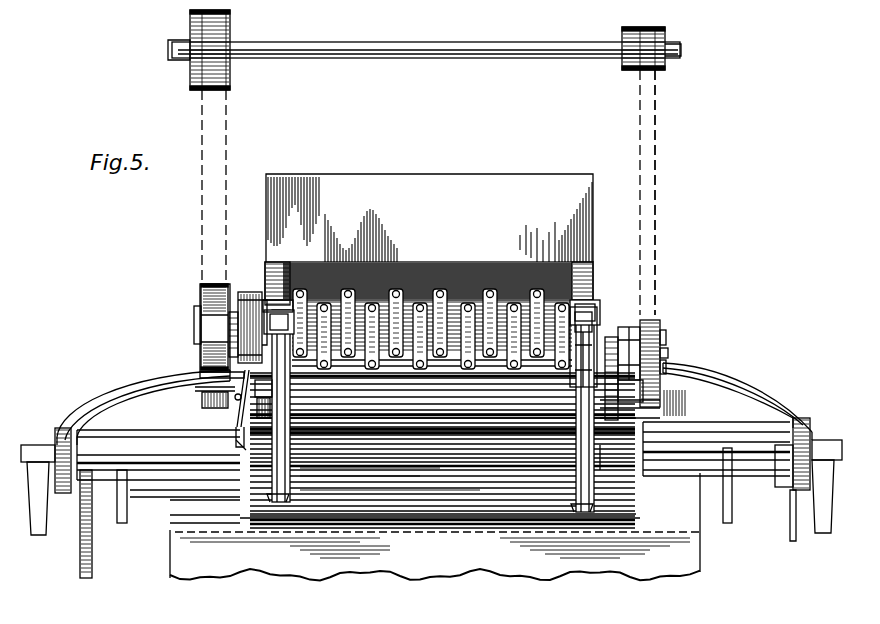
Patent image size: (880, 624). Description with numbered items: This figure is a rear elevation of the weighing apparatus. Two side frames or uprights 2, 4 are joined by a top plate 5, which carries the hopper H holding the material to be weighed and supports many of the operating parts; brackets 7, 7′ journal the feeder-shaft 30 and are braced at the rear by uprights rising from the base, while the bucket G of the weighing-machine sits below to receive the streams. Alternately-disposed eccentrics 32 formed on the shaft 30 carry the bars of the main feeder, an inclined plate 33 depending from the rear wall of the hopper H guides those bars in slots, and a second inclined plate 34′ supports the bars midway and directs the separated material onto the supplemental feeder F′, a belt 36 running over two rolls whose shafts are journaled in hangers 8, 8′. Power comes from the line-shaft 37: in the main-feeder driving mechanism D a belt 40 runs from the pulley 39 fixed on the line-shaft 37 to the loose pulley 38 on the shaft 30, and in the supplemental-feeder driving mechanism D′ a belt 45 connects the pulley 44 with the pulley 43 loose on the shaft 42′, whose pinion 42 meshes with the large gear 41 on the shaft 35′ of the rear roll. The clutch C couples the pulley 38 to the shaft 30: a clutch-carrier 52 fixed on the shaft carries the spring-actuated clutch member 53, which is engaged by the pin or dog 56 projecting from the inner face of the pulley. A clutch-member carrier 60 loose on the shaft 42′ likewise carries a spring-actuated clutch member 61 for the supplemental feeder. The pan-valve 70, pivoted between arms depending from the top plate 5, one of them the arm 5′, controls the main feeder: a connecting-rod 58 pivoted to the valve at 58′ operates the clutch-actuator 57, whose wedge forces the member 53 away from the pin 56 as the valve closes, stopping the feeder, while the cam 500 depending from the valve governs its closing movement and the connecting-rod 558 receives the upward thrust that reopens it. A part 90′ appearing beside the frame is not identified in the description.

The line-shaft 37 is at (608, 50).
The pulley or belt-wheel 39 is at (218, 40).
The pulley or band-wheel 44 is at (650, 62).
The belt 45 is at (655, 167).
The driving mechanism for the main feeder D is at (199, 187).
The driving mechanism for the supplemental feeder D′ is at (658, 192).
The supply device or hopper H is at (275, 222).
The inclined plate 33 is at (590, 268).
The bracket 7 is at (265, 279).
The bracket 7′ is at (591, 285).
The eccentrics 32 is at (425, 344).
The second inclined plate 34′ is at (400, 373).
The belt 36 is at (501, 408).
The supplemental feeder F′ is at (390, 479).
The bracket or hanger 8′ is at (600, 452).
The bucket G is at (688, 558).
The top plate 5 is at (120, 398).
The bracket or hanger 8 is at (234, 412).
The bar 90′ is at (170, 468).
The cam 500 is at (92, 566).
The valve 70 is at (243, 496).
The bracket or arm 5′ is at (65, 491).
The side frame or upright 2 is at (40, 525).
The clutch-member carrier 60 is at (696, 374).
The connecting-rod 558 is at (790, 520).
The side frame or upright 4 is at (827, 515).
The pulley or belt-wheel 38 is at (208, 297).
The belt 40 is at (203, 258).
The clutch C is at (230, 318).
The spring-actuated clutch member 53 is at (233, 348).
The clutch member (pin or dog) 56 is at (210, 360).
The clutch-carrier 52 is at (258, 330).
The shaft 35′ is at (252, 385).
The clutch-actuator 57 is at (240, 430).
The connecting-rod 58 is at (240, 455).
The pivot 58′ is at (245, 445).
The feeder-shaft 30 is at (598, 325).
The spring-actuated clutch member 61 is at (658, 386).
The pinion 42 is at (655, 325).
The pulley or belt-wheel 43 is at (660, 350).
The shaft 42′ is at (658, 363).
The gear 41 is at (630, 402).